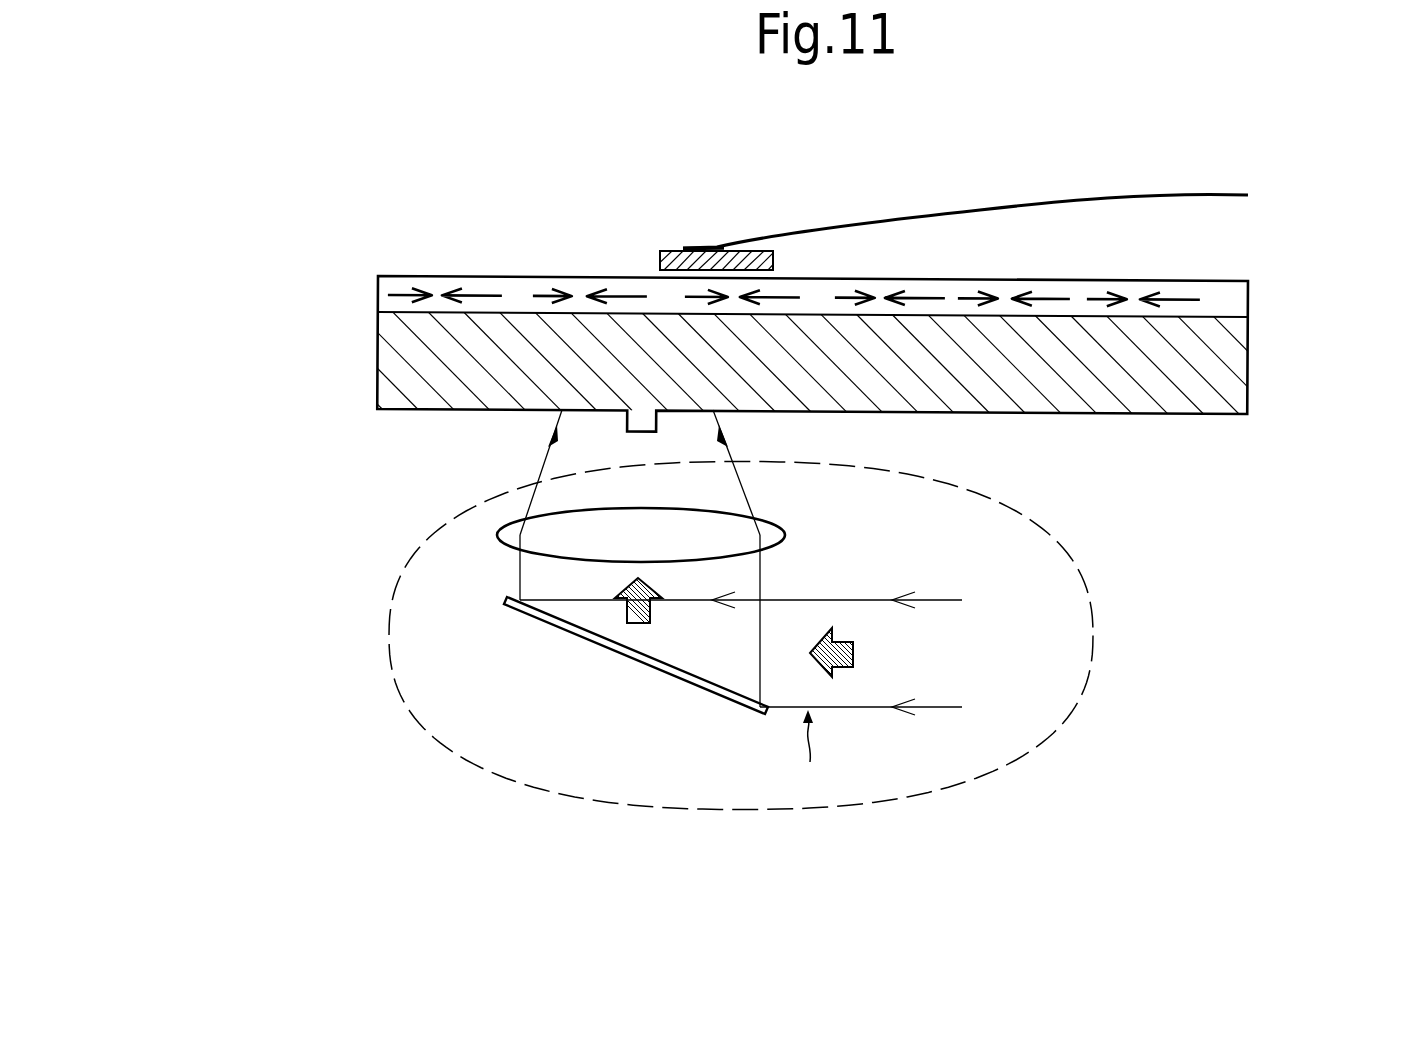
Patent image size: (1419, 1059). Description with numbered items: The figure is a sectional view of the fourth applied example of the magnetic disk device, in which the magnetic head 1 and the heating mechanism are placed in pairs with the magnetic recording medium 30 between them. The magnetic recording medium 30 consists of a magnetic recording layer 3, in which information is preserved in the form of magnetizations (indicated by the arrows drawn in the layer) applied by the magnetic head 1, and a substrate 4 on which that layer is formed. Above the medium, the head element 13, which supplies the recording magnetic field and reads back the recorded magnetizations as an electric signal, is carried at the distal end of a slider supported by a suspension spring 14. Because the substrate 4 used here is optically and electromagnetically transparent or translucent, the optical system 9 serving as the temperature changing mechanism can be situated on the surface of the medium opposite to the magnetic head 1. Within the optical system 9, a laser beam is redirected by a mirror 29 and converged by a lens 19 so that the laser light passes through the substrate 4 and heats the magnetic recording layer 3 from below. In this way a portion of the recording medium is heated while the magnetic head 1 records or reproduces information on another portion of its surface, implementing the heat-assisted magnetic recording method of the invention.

The magnetic head 1 is at (719, 238).
The magnetic recording layer 3 is at (1232, 300).
The substrate 4 is at (418, 360).
The optical system 9 is at (1093, 633).
The head element 13 is at (663, 262).
The suspension spring 14 is at (1006, 209).
The lens 19 is at (775, 532).
The mirror 29 is at (531, 614).
The magnetic recording medium 30 is at (361, 380).